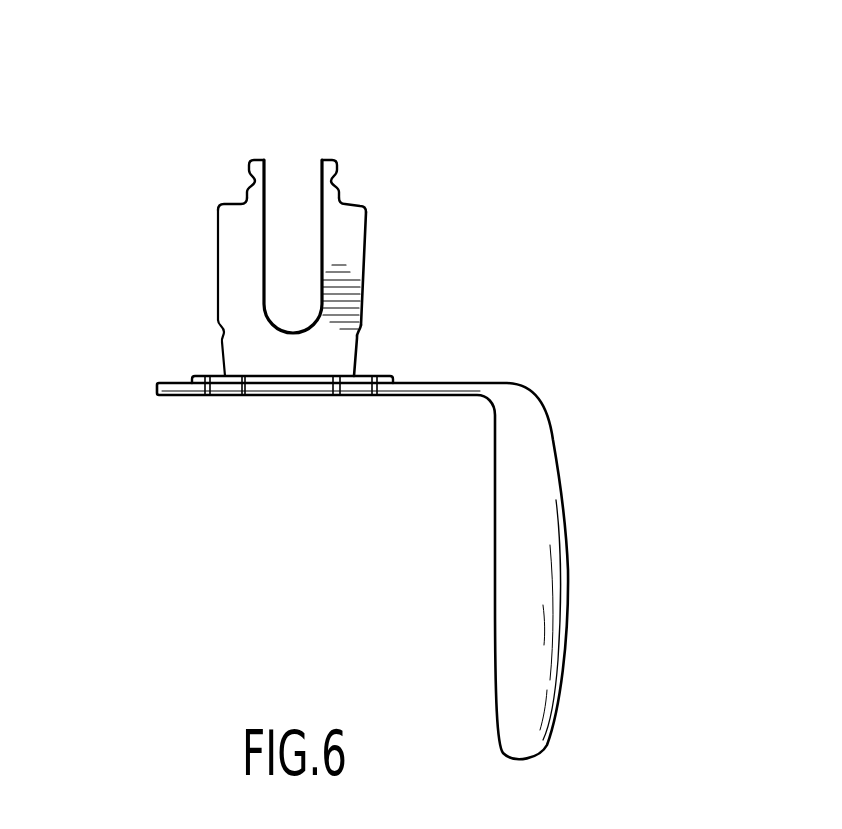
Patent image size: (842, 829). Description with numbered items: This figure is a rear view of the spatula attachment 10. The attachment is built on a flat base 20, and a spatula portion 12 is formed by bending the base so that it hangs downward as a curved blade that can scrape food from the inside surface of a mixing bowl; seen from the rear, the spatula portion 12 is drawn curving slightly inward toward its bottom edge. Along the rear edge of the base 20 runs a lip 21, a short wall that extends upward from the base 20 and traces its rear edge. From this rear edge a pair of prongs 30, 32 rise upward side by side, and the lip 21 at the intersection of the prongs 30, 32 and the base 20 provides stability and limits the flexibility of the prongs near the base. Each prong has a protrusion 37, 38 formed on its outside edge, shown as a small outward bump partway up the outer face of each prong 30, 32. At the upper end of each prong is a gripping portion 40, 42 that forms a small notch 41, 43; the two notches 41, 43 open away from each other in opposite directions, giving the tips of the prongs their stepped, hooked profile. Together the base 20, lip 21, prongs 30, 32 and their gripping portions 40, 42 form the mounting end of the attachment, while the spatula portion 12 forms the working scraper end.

The spatula attachment 10 is at (627, 413).
The spatula portion 12 is at (567, 560).
The base 20 is at (437, 396).
The lip 21 is at (188, 375).
The prong 30 is at (347, 237).
The prong 32 is at (230, 250).
The protrusion 37 is at (368, 332).
The protrusion 38 is at (210, 333).
The gripping portion 40 is at (328, 157).
The notch 41 is at (342, 178).
The gripping portion 42 is at (253, 158).
The notch 43 is at (247, 177).